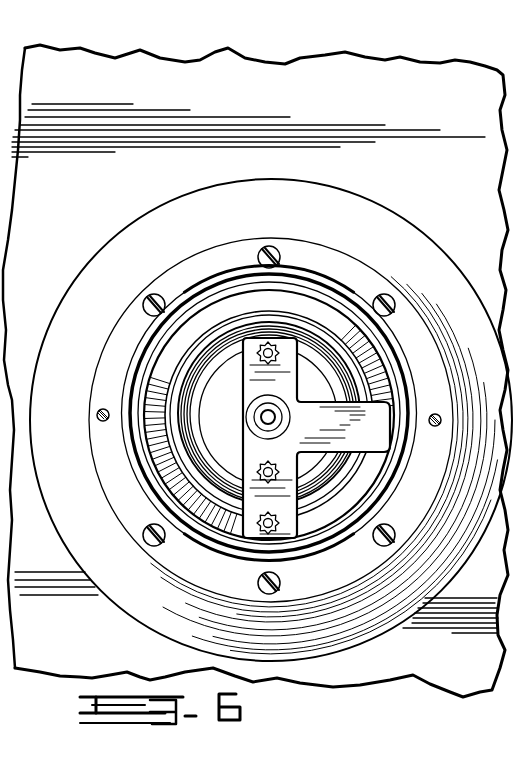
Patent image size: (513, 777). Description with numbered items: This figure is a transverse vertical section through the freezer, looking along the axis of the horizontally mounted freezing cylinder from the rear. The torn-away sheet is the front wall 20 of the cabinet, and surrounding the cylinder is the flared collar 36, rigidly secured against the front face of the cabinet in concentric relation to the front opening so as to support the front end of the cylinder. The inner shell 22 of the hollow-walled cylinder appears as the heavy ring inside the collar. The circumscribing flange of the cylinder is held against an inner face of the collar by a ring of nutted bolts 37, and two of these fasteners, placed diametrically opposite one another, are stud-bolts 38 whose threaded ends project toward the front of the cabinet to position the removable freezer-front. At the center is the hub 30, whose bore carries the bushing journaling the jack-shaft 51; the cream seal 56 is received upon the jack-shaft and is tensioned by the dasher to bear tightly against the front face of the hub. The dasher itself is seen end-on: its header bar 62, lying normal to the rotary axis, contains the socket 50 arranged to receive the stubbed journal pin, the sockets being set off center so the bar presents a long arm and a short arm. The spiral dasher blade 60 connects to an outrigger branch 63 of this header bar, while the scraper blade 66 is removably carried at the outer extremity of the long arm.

The front wall 20 is at (234, 63).
The inner shell 22 is at (152, 343).
The hub 30 is at (212, 393).
The flared collar 36 is at (172, 218).
The nutted bolts 37 is at (380, 297).
The stud-bolts 38 is at (96, 416).
The socket 50 is at (283, 423).
The jack-shaft 51 is at (258, 419).
The cream seal 56 is at (233, 377).
The dasher blade 60 is at (170, 480).
The header bar 62 is at (290, 508).
The outrigger branch 63 is at (378, 442).
The scraper blade 66 is at (280, 517).